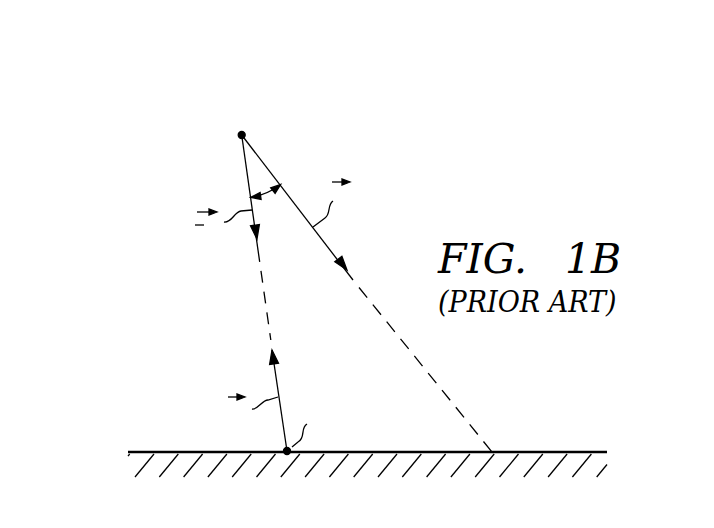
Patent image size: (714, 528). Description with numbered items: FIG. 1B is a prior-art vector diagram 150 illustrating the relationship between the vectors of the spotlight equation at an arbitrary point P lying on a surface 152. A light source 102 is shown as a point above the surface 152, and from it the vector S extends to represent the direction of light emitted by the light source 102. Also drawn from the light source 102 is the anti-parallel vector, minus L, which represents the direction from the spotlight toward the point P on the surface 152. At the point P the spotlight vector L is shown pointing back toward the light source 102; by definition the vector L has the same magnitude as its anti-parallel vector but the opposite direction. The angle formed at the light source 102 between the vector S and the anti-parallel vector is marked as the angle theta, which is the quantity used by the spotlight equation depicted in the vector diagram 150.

The light source 102 is at (240, 131).
The vector diagram 150 is at (117, 254).
The surface 152 is at (563, 452).